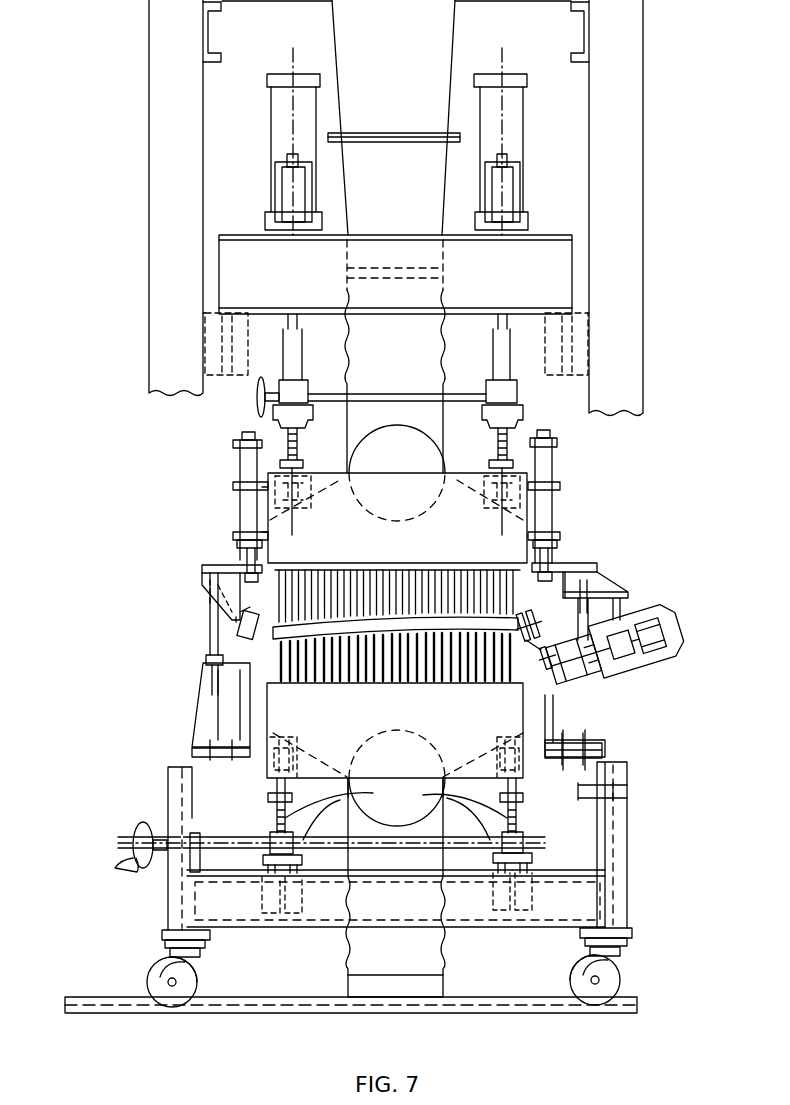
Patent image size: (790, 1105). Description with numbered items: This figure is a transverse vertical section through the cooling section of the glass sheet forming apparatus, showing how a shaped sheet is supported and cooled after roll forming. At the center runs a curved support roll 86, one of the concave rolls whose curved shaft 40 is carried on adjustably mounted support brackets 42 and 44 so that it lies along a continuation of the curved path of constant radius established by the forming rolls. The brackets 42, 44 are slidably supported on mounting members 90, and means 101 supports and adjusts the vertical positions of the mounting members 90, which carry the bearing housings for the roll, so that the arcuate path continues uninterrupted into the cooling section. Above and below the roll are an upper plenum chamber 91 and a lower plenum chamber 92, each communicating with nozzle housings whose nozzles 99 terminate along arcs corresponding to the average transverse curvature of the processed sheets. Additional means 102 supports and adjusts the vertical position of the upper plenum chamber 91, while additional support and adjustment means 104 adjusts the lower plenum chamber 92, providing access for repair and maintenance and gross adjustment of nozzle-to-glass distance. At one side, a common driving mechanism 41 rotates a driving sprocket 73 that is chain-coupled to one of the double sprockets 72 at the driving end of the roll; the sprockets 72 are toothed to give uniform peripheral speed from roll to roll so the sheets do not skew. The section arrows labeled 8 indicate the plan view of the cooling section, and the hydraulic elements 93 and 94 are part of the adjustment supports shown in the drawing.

The hydraulic cylinder 93 is at (455, 27).
The piston rod 94 is at (447, 328).
The additional means 102 is at (520, 398).
The means for supporting and adjusting 101 is at (240, 457).
The upper plenum chamber 91 is at (360, 544).
The curved support roll 86 is at (438, 580).
The nozzles 99 is at (318, 624).
The section line 8 is at (288, 614).
The mounting members 90 is at (230, 590).
The curved shafts 40 is at (263, 637).
The support bracket 42 is at (240, 627).
The support bracket 44 is at (551, 627).
The double sprockets 72 is at (537, 652).
The driving sprocket 73 is at (548, 668).
The common driving mechanism 41 is at (648, 671).
The lower plenum chamber 92 is at (365, 724).
The additional support and adjustment means 104 is at (432, 797).